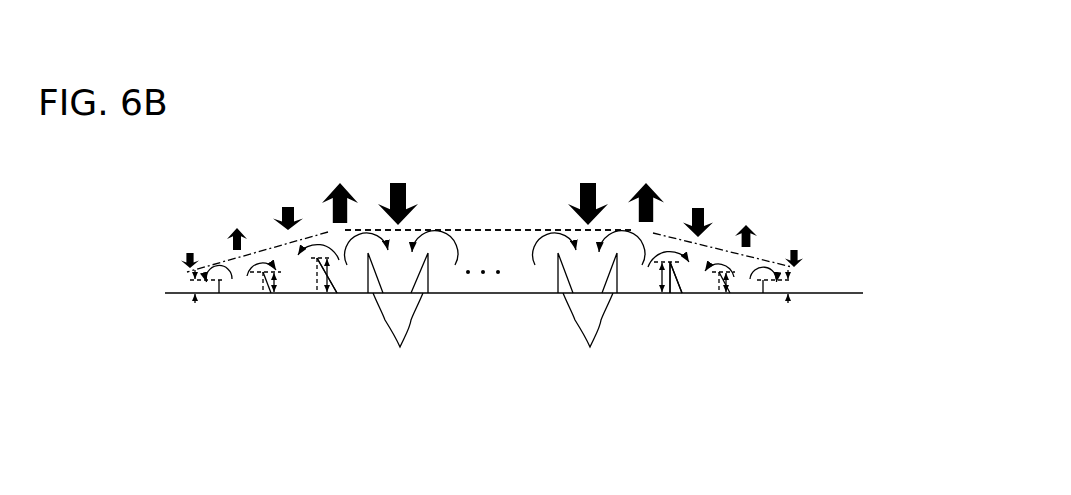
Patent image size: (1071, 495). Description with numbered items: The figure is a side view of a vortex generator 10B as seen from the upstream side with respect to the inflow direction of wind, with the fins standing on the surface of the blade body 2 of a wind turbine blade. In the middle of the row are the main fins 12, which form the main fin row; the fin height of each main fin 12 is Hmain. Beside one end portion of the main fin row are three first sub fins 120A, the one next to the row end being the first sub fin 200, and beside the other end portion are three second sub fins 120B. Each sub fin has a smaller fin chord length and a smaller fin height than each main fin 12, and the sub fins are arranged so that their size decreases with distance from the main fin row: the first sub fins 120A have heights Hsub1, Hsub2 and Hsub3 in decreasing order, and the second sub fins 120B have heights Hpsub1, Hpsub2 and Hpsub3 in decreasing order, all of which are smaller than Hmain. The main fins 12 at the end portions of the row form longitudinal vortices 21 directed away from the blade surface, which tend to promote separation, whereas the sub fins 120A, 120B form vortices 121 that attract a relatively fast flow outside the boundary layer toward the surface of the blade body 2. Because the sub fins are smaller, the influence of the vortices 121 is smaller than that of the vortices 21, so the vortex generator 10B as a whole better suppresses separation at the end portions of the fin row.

The vortex generator 10B is at (843, 142).
The blade body 2 is at (845, 293).
The longitudinal vortices 21 is at (367, 232).
The main fin 12 is at (492, 318).
The vortices 121 is at (213, 271).
The second sub fin 120B is at (262, 295).
The first sub fin 120A is at (672, 294).
The first sub fin 200 is at (506, 364).
The fin height of the main fin Hmain is at (530, 294).
The fin height of the first sub fin Hsub1 is at (660, 294).
The fin height of the first sub fin Hsub2 is at (720, 294).
The fin height of the first sub fin Hsub3 is at (793, 297).
The fin height of the second sub fin Hpsub1 is at (342, 294).
The fin height of the second sub fin Hpsub2 is at (283, 294).
The fin height of the second sub fin Hpsub3 is at (192, 297).